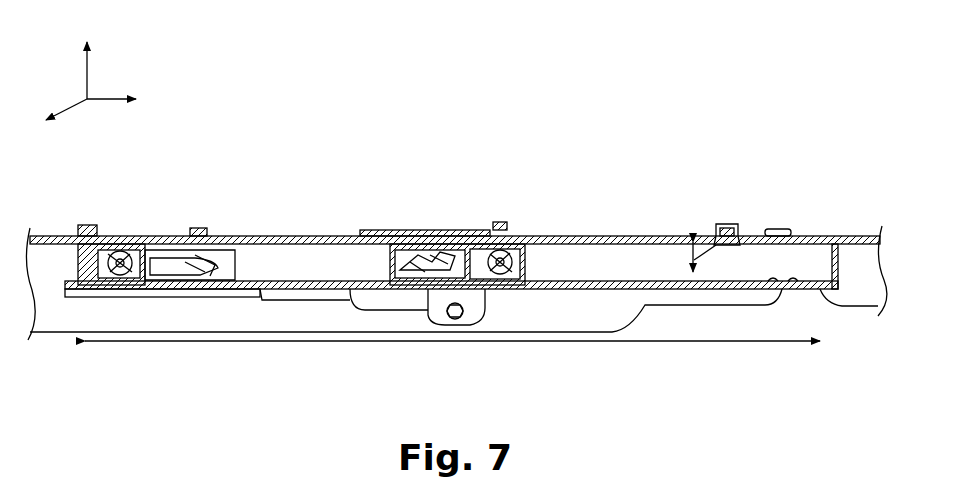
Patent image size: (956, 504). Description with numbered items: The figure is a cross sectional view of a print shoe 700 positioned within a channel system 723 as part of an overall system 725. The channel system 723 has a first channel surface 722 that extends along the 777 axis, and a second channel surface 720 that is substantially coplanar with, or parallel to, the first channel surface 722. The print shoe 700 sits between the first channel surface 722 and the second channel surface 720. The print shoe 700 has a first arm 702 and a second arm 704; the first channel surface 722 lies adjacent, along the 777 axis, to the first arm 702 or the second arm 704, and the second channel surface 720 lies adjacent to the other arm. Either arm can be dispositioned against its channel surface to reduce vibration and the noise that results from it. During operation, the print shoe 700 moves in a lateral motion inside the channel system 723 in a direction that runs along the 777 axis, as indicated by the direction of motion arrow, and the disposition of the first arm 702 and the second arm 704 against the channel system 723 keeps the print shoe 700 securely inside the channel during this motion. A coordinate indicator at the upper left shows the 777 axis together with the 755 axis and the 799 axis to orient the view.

The print shoe 700 is at (456, 275).
The first arm 702 is at (377, 250).
The second arm 704 is at (374, 272).
The second channel surface 720 is at (300, 290).
The first channel surface 722 is at (655, 236).
The channel system 723 is at (722, 224).
The system 725 is at (648, 312).
The axis 755 is at (47, 118).
The axis 777 is at (132, 99).
The axis 799 is at (88, 56).